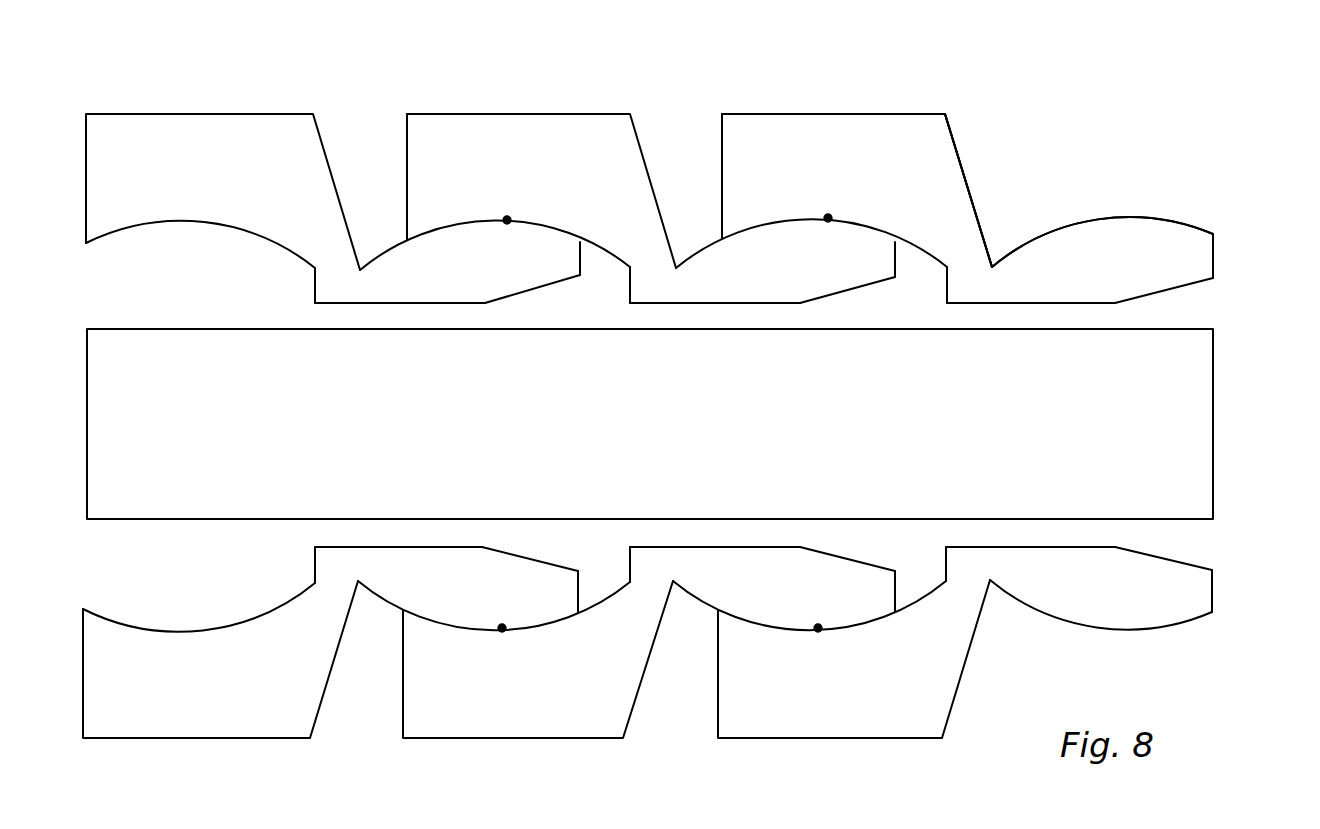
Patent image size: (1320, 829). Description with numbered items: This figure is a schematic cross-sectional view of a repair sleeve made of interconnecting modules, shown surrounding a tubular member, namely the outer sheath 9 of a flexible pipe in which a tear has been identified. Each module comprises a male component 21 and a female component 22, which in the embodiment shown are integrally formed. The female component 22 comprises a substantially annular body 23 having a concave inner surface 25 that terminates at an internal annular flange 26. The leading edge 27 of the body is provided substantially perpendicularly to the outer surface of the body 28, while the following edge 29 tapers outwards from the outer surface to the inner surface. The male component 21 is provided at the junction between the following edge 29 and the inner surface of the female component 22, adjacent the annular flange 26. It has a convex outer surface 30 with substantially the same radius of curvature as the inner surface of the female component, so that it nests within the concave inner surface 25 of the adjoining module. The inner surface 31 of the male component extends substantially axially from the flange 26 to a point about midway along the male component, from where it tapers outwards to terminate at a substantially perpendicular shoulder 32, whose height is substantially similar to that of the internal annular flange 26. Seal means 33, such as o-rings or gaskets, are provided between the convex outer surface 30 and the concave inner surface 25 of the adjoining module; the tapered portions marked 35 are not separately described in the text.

The outer sheath 9 is at (1196, 469).
The male component 21 is at (1070, 248).
The female component 22 is at (767, 107).
The annular body 23 is at (853, 148).
The concave inner surface 25 is at (923, 252).
The internal annular flange 26 is at (630, 292).
The leading edge 27 is at (403, 148).
The outer surface of the body 28 is at (918, 112).
The following edge 29 is at (966, 178).
The convex outer surface 30 is at (1147, 217).
The inner surface of the male component 31 is at (402, 305).
The shoulder 32 is at (585, 262).
The seal means 33 is at (510, 218).
The bevel 35 is at (490, 290).